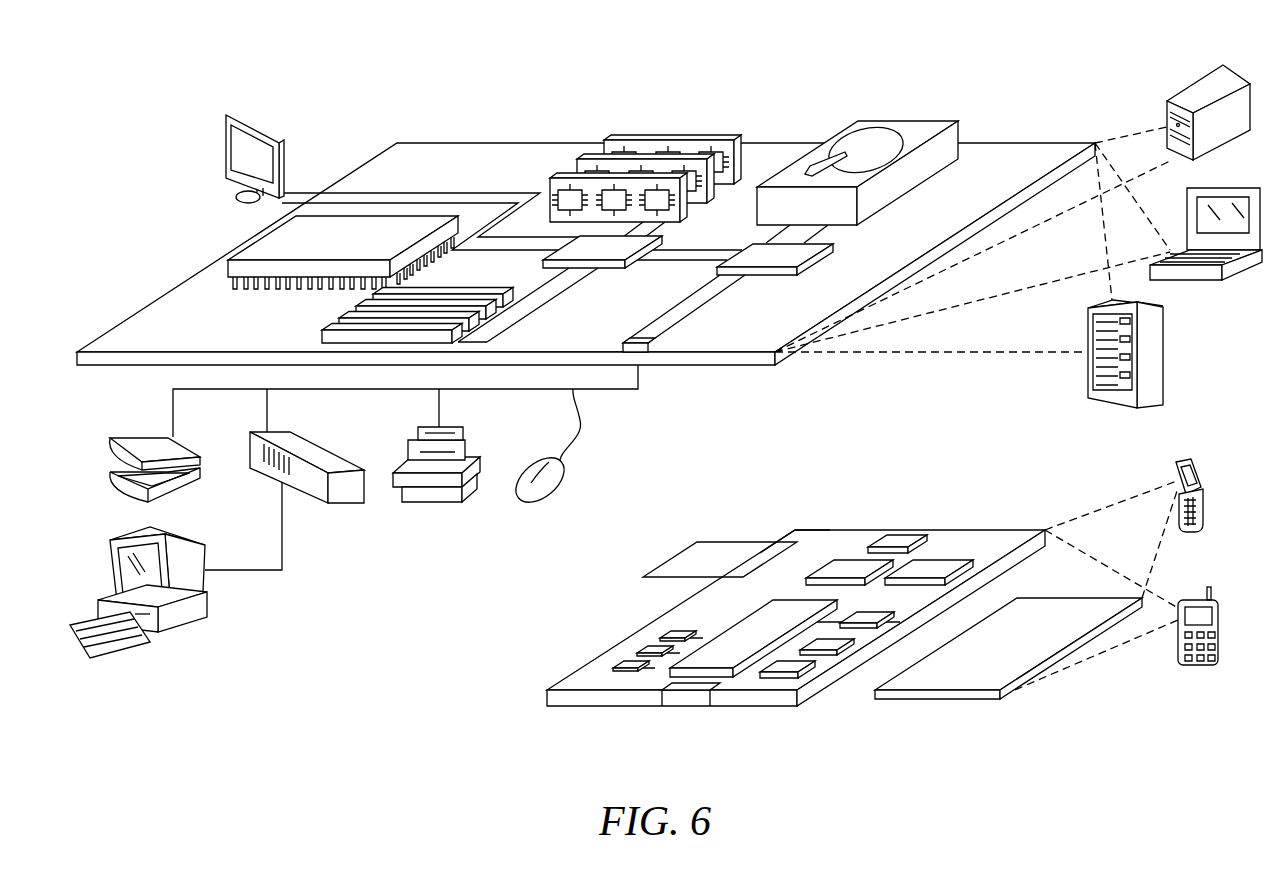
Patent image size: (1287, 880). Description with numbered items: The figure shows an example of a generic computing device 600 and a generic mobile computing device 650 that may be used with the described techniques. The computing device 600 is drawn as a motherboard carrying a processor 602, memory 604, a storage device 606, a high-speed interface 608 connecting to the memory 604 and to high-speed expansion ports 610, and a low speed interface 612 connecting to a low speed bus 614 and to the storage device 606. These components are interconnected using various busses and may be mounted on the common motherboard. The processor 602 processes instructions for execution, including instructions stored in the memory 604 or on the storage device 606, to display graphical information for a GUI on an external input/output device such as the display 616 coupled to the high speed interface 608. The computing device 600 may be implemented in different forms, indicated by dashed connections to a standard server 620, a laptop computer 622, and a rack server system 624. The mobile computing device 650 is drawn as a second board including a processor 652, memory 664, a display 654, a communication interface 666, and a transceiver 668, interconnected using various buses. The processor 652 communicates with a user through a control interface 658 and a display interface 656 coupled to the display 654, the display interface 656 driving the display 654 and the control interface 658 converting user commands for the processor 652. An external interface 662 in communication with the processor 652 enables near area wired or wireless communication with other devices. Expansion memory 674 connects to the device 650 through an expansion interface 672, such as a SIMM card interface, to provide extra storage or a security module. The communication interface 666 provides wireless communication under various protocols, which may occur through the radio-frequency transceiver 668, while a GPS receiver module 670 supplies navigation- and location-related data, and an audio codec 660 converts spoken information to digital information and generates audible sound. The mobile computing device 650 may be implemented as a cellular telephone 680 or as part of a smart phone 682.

The computing device 600 is at (351, 93).
The processor 602 is at (254, 245).
The memory 604 is at (679, 136).
The storage device 606 is at (898, 121).
The high-speed interface 608 is at (614, 244).
The high-speed expansion ports 610 is at (349, 318).
The low speed interface 612 is at (749, 252).
The low speed bus 614 is at (643, 337).
The display 616 is at (233, 117).
The standard server 620 is at (1187, 97).
The laptop computer 622 is at (1240, 188).
The rack server system 624 is at (1165, 355).
The mobile computing device 650 is at (503, 712).
The processor 652 is at (724, 645).
The display 654 is at (1043, 613).
The display interface 656 is at (804, 667).
The control interface 658 is at (833, 641).
The audio codec 660 is at (870, 612).
The external interface 662 is at (687, 693).
The memory 664 is at (642, 648).
The communication interface 666 is at (848, 562).
The transceiver 668 is at (935, 562).
The GPS receiver module 670 is at (897, 540).
The expansion interface 672 is at (778, 540).
The expansion memory 674 is at (698, 540).
The cellular telephone 680 is at (1186, 461).
The smart phone 682 is at (1195, 599).